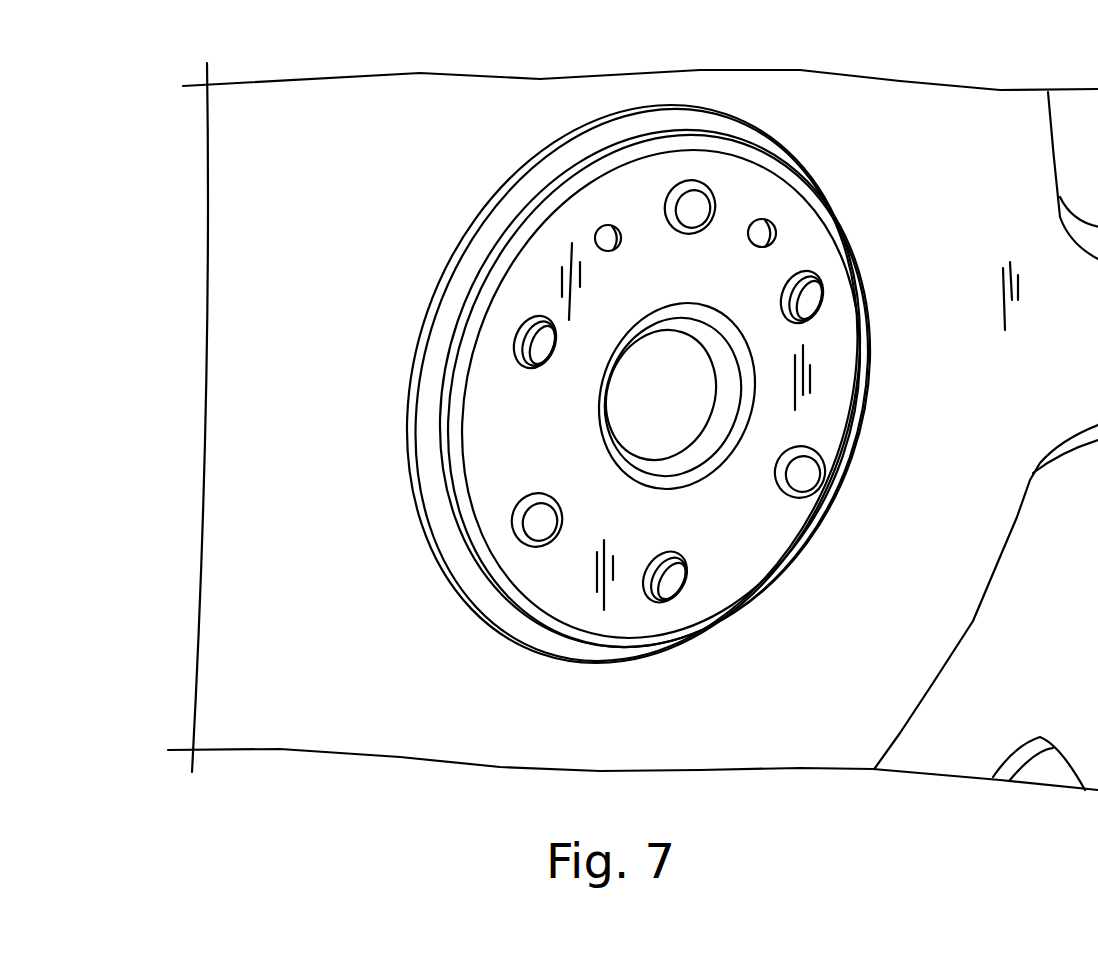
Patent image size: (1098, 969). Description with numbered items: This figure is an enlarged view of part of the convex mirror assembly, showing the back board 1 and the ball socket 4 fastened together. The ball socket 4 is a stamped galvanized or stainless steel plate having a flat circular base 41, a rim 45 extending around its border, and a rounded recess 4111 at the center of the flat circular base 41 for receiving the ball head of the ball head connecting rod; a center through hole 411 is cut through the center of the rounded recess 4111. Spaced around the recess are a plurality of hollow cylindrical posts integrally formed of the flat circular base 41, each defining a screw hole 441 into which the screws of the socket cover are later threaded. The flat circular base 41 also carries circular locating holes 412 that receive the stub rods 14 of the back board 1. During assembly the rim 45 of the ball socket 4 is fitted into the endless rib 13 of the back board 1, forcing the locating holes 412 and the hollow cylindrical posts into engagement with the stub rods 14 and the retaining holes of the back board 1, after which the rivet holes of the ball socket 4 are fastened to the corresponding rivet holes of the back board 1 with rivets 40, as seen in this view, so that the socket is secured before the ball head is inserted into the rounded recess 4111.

The back board 1 is at (998, 74).
The ball socket 4 is at (670, 367).
The endless rib 13 is at (738, 130).
The stub rods 14 is at (614, 250).
The rivets 40 is at (822, 478).
The flat circular base 41 is at (840, 390).
The center through hole 411 is at (653, 400).
The rounded recess 4111 is at (745, 352).
The circular locating holes 412 is at (605, 235).
The screw holes 441 is at (516, 350).
The rim 45 is at (460, 345).